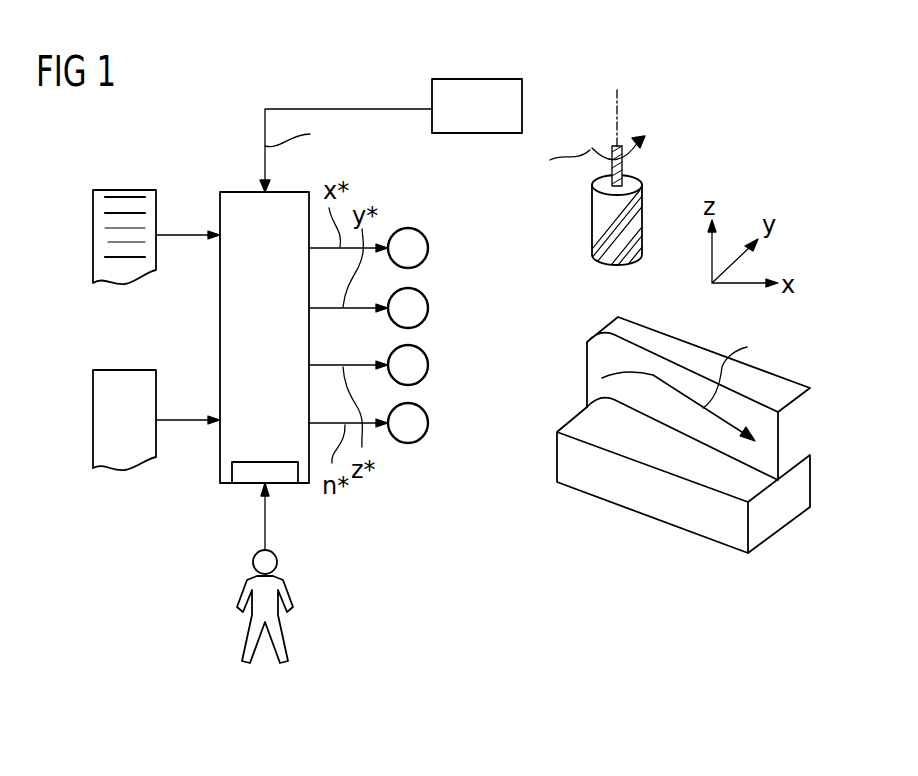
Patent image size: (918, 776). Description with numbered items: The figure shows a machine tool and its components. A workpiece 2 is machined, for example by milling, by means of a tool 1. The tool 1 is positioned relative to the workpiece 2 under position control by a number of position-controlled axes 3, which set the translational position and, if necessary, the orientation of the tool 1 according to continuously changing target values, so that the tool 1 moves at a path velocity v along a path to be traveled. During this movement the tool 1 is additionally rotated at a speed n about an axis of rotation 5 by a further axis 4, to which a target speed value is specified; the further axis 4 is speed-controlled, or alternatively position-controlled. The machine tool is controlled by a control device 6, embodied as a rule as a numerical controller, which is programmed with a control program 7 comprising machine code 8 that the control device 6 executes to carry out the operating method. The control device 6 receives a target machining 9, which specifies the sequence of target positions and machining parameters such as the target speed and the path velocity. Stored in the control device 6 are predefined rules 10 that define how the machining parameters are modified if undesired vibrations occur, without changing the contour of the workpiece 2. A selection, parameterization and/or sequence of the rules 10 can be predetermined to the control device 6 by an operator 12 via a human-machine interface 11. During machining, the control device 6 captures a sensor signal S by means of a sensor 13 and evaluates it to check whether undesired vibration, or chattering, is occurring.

The tool 1 is at (590, 222).
The workpiece 2 is at (612, 503).
The position-controlled axes 3 is at (428, 248).
The further axis 4 is at (428, 423).
The axis of rotation 5 is at (620, 108).
The control device 6 is at (247, 191).
The control program 7 is at (125, 286).
The machine code 8 is at (112, 241).
The target machining 9 is at (93, 414).
The rules 10 is at (258, 521).
The human-machine interface 11 is at (284, 486).
The operator 12 is at (240, 592).
The sensor 13 is at (472, 134).